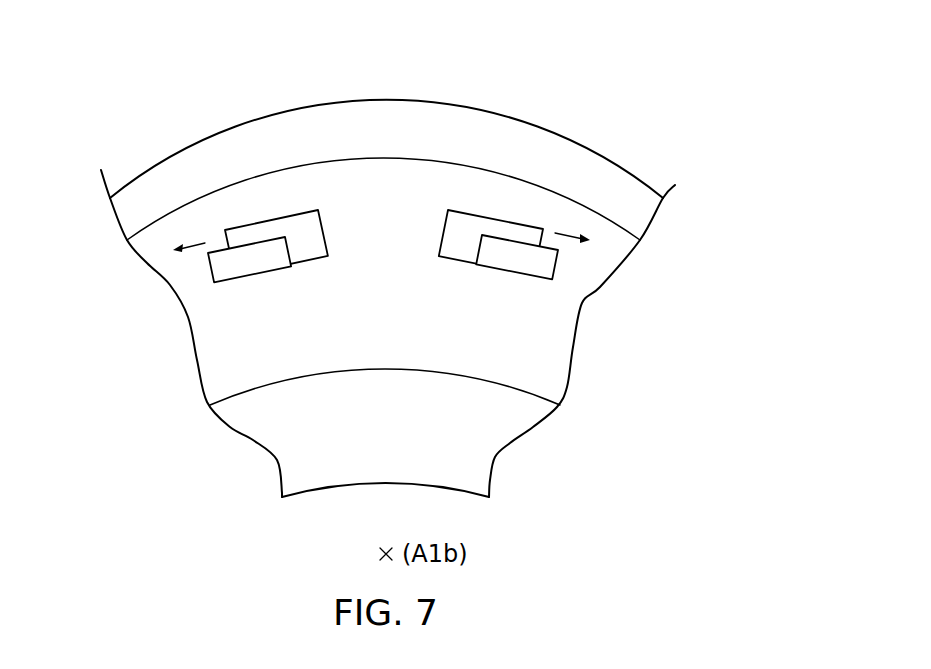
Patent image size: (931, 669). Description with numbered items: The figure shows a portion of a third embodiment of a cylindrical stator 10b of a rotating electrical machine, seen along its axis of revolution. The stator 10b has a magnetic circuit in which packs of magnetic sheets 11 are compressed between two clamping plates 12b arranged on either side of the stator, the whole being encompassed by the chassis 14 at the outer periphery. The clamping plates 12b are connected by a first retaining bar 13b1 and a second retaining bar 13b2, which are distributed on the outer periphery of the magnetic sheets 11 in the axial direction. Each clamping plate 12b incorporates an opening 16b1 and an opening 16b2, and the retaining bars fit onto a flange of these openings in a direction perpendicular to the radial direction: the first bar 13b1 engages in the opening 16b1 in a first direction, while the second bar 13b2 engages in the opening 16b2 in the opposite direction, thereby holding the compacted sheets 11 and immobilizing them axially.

The cylindrical stator 10b is at (438, 263).
The chassis 14 is at (493, 125).
The clamping plate 12b is at (563, 333).
The magnetic sheets 11 is at (507, 437).
The opening 16b1 is at (497, 214).
The opening 16b2 is at (270, 220).
The first retaining bar 13b1 is at (557, 266).
The second retaining bar 13b2 is at (211, 268).